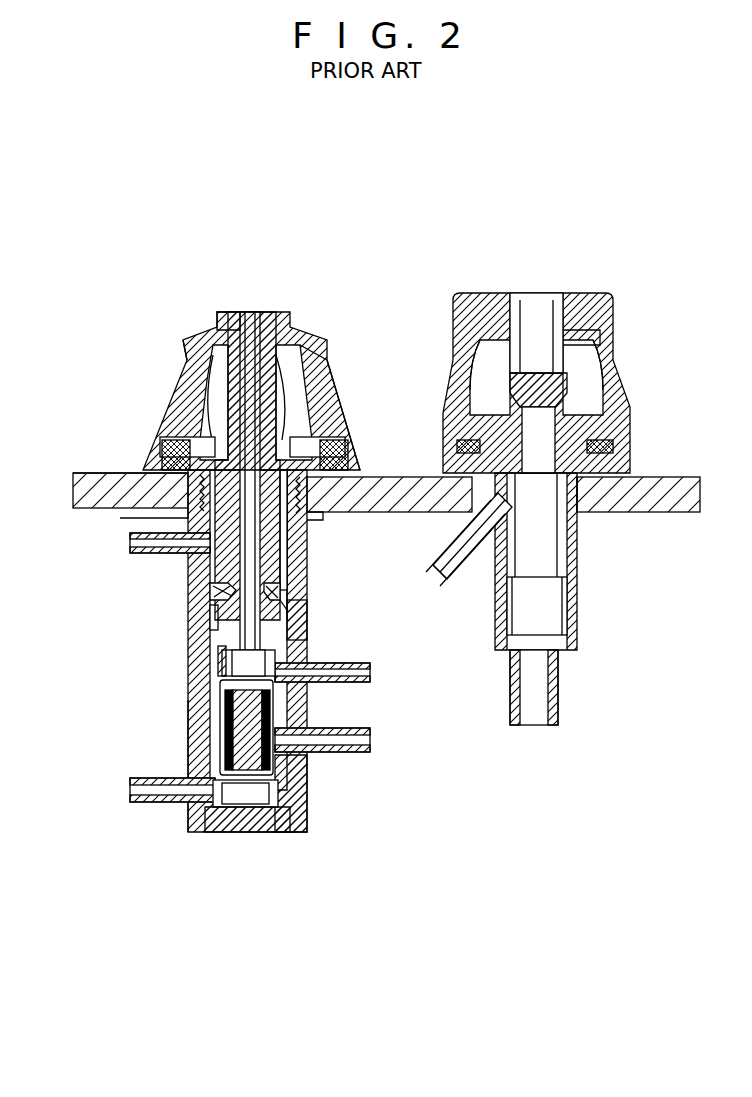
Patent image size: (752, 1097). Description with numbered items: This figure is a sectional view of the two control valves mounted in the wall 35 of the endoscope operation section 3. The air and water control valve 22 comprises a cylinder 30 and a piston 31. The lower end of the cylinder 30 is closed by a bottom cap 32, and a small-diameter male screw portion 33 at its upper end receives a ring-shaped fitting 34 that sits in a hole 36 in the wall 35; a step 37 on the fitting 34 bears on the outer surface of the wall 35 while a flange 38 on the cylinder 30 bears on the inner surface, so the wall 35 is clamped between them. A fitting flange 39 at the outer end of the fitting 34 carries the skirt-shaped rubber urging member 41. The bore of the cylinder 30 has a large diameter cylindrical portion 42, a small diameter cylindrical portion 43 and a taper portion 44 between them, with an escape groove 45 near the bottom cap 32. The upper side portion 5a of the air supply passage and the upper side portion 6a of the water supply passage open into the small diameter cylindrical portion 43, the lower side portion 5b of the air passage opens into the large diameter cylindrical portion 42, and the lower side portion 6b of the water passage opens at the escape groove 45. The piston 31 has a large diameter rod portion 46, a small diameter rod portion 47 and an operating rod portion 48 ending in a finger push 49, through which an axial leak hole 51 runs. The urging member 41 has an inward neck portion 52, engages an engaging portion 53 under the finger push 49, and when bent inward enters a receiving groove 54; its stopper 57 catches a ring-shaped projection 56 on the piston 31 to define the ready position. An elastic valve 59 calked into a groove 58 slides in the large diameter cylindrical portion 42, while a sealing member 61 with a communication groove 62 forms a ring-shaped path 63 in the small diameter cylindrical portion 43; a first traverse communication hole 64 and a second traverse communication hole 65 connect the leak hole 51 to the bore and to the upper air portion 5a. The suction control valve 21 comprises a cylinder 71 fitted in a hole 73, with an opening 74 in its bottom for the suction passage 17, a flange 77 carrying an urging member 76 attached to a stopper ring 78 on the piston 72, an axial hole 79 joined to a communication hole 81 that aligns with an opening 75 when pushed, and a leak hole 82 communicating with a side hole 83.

The operation section 3 is at (685, 476).
The upper side portion of the air supply passage 5a is at (352, 682).
The lower side portion of the air supply passage 5b is at (150, 554).
The upper side portion of the water supply passage 6a is at (355, 753).
The lower side portion of the water supply passage 6b is at (150, 803).
The suction passage 17 is at (440, 582).
The control valve 21 is at (625, 332).
The control valve 22 is at (180, 318).
The cylinder 30 is at (200, 692).
The piston 31 is at (272, 585).
The bottom cap 32 is at (250, 834).
The male screw portion 33 is at (303, 512).
The fitting 34 is at (122, 518).
The wall 35 is at (78, 474).
The hole 36 is at (202, 516).
The step 37 is at (75, 490).
The flange 38 is at (270, 547).
The fitting flange 39 is at (348, 455).
The urging member 41 is at (330, 410).
The large diameter cylindrical portion 42 is at (300, 625).
The small diameter cylindrical portion 43 is at (195, 745).
The taper portion 44 is at (215, 620).
The escape groove 45 is at (280, 798).
The large diameter rod portion 46 is at (284, 563).
The small diameter rod portion 47 is at (265, 715).
The operating rod portion 48 is at (268, 332).
The finger push 49 is at (243, 315).
The leak hole 51 is at (240, 396).
The neck portion 52 is at (312, 370).
The engaging portion 53 is at (215, 328).
The receiving groove 54 is at (186, 345).
The projection 56 is at (170, 460).
The stopper 57 is at (182, 440).
The groove 58 is at (212, 590).
The valve 59 is at (288, 600).
The sealing member 61 is at (222, 760).
The communication groove 62 is at (290, 770).
The path 63 is at (226, 730).
The first traverse communication hole 64 is at (278, 665).
The second traverse communication hole 65 is at (222, 655).
The cylinder 71 is at (572, 532).
The piston 72 is at (560, 570).
The hole 73 is at (595, 492).
The opening 74 is at (545, 690).
The opening 75 is at (470, 562).
The urging member 76 is at (605, 385).
The flange 77 is at (608, 450).
The stopper ring 78 is at (585, 312).
The hole 79 is at (552, 600).
The communication hole 81 is at (465, 435).
The leak hole 82 is at (536, 312).
The side hole 83 is at (575, 378).